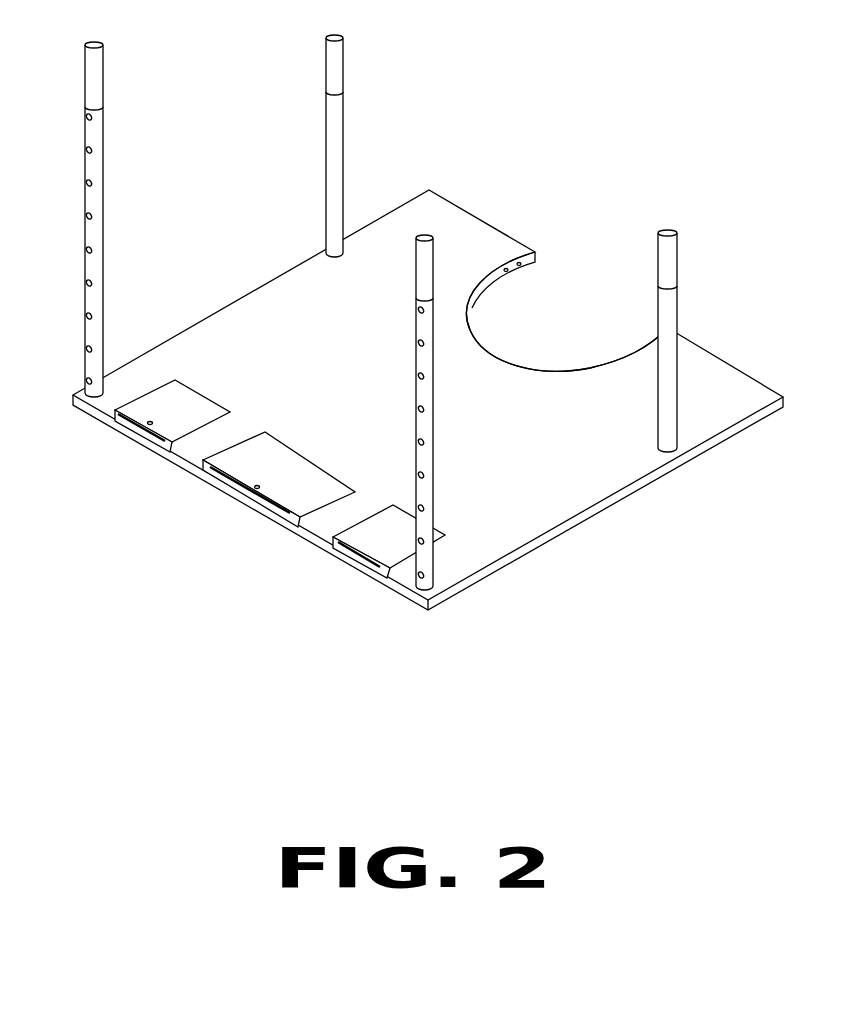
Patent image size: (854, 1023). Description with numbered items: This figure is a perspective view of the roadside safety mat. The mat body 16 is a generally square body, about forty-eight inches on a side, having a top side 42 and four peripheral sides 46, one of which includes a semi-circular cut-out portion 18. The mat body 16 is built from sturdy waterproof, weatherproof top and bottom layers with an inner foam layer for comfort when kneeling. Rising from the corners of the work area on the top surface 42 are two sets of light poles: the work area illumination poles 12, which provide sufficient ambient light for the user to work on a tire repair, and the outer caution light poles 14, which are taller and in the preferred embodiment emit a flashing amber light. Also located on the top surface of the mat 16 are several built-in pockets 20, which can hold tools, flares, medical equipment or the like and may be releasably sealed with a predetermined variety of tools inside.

The work area illumination pole 12 is at (335, 118).
The caution light pole 14 is at (93, 133).
The mat body 16 is at (402, 344).
The semi-circular cut-out portion 18 is at (548, 355).
The built-in pocket 20 is at (162, 432).
The top side 42 is at (547, 493).
The peripheral side 46 is at (477, 215).